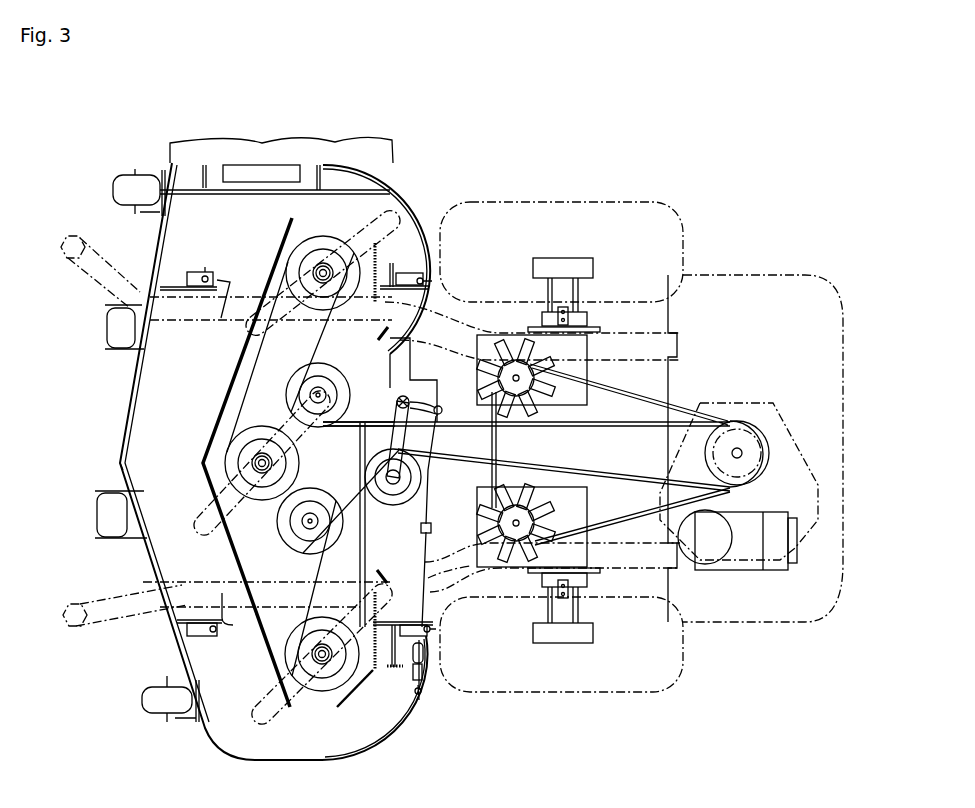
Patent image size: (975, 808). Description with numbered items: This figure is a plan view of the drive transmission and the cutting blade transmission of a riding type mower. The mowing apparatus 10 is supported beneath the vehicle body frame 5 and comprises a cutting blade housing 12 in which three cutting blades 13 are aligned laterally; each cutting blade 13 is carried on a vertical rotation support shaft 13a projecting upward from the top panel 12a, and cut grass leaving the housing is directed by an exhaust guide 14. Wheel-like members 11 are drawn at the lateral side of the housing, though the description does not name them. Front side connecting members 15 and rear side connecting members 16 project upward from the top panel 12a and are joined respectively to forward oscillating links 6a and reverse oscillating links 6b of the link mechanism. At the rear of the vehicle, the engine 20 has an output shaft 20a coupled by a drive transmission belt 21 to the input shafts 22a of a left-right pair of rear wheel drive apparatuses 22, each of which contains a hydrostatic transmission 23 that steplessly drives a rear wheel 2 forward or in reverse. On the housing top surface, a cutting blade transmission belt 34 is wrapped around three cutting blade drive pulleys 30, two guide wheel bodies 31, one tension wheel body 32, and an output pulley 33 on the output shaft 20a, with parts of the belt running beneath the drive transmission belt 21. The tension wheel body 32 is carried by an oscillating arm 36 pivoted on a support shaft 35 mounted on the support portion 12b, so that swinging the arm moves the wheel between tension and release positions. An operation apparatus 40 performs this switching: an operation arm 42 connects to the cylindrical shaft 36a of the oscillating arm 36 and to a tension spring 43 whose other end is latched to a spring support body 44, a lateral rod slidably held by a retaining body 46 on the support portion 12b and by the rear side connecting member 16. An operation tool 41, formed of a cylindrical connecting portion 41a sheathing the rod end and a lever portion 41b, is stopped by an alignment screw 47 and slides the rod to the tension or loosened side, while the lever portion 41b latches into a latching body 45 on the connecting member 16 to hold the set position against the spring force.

The rear wheel 2 is at (603, 200).
The vehicle body frame 5 is at (194, 322).
The forward oscillating link 6a is at (174, 286).
The reverse oscillating link 6b is at (418, 304).
The mowing apparatus 10 is at (118, 423).
The gauge wheel 11 is at (112, 190).
The cutting blade housing 12 is at (117, 477).
The top panel 12a is at (142, 366).
The support portion 12b is at (408, 373).
The cutting blade 13 is at (347, 231).
The rotation support shaft 13a is at (318, 280).
The exhaust guide 14 is at (380, 157).
The front side connecting member 15 is at (218, 285).
The rear side connecting member 16 is at (398, 264).
The engine 20 is at (802, 468).
The output shaft 20a is at (742, 451).
The drive transmission belt 21 is at (674, 400).
The rear wheel drive apparatus 22 is at (590, 402).
The input shaft 22a is at (522, 382).
The hydrostatic transmission 23 is at (497, 342).
The cutting blade drive pulley 30 is at (302, 249).
The guide wheel body 31 is at (328, 368).
The tension wheel body 32 is at (374, 453).
The output pulley 33 is at (747, 421).
The cutting blade transmission belt 34 is at (245, 392).
The support shaft 35 is at (400, 397).
The oscillating arm 36 is at (414, 440).
The cylindrical shaft 36a is at (394, 402).
The operation apparatus 40 is at (433, 707).
The operation tool 41 is at (490, 646).
The connecting portion 41a is at (425, 653).
The lever portion 41b is at (424, 672).
The operation arm 42 is at (446, 390).
The tension spring 43 is at (433, 488).
The spring support body 44 is at (443, 577).
The latching body 45 is at (389, 663).
The retaining body 46 is at (433, 528).
The alignment screw 47 is at (421, 684).